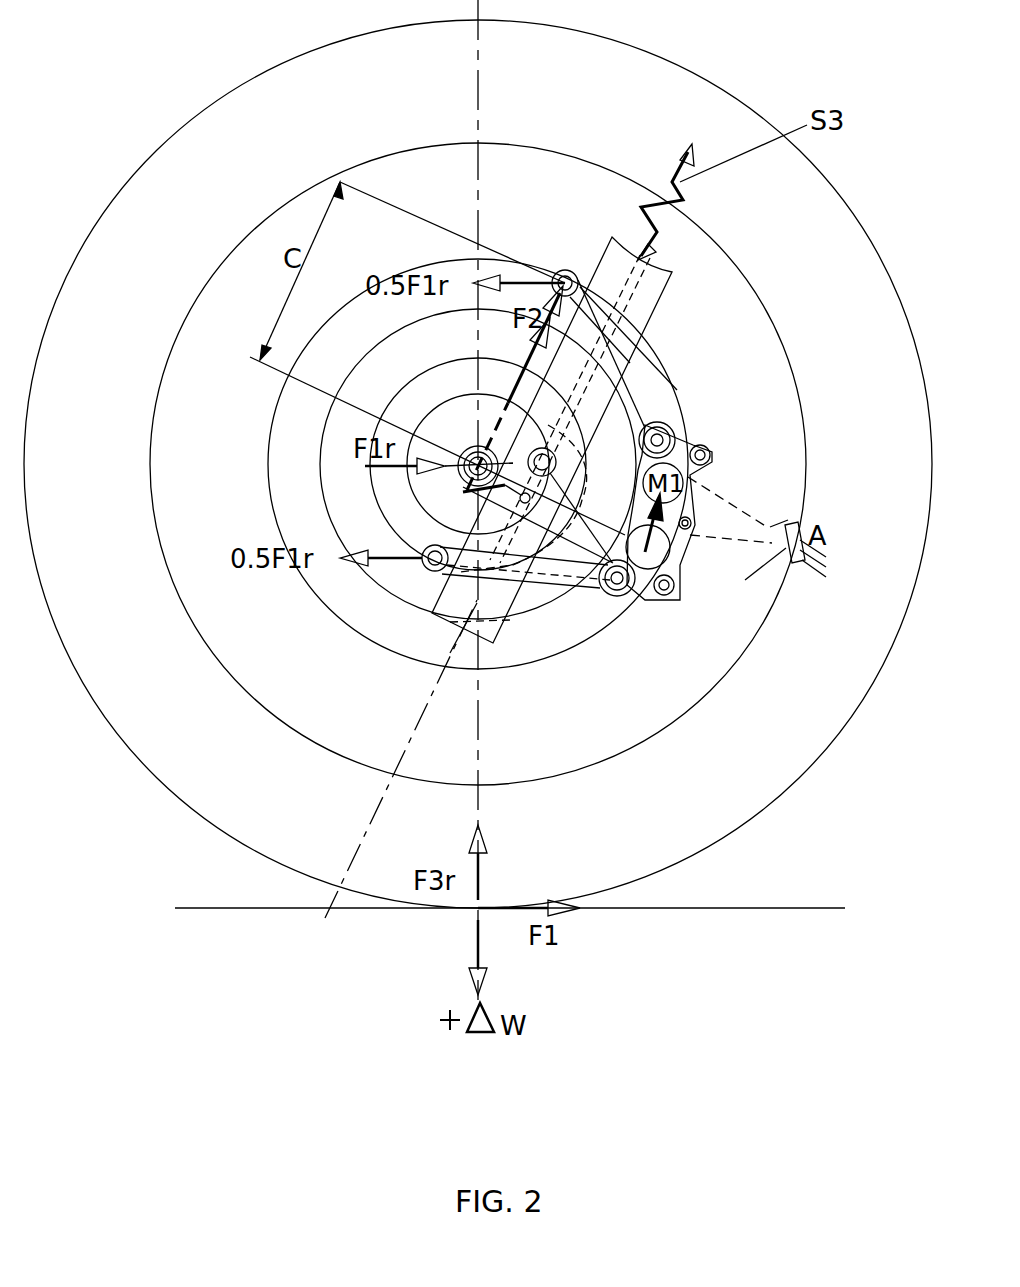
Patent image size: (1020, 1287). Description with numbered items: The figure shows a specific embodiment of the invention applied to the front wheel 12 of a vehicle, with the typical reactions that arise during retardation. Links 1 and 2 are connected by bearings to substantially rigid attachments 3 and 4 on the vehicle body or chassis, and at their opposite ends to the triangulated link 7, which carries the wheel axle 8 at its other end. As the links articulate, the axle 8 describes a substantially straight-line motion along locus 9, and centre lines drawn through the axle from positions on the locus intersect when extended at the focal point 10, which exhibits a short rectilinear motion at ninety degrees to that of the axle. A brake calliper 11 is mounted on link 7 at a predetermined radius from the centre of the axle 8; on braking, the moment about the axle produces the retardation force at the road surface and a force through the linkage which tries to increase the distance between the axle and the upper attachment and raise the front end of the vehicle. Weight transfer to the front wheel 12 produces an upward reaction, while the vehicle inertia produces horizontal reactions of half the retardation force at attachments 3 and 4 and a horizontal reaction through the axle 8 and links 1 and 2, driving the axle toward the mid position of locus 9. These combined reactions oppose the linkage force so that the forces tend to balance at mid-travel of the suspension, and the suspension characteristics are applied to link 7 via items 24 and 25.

The link 1 is at (613, 353).
The link 2 is at (557, 577).
The rigid attachment 3 is at (558, 272).
The rigid attachment 4 is at (422, 573).
The triangulated link 7 is at (660, 422).
The wheel axle 8 is at (463, 481).
The locus 9 is at (530, 453).
The focal point 10 is at (757, 543).
The brake calliper 11 is at (703, 472).
The front wheel 12 is at (818, 762).
The suspension item 24 is at (645, 262).
The suspension item 25 is at (640, 594).